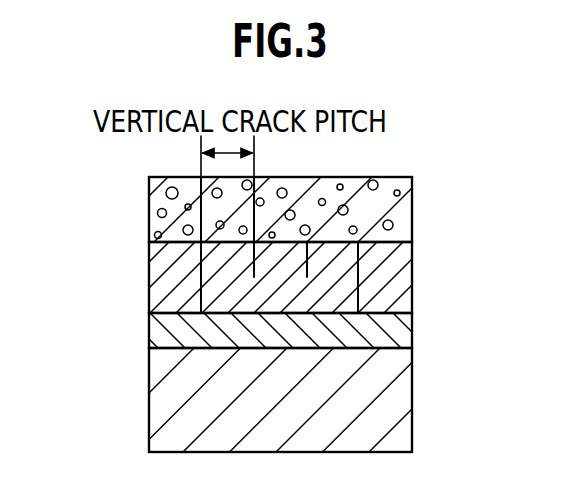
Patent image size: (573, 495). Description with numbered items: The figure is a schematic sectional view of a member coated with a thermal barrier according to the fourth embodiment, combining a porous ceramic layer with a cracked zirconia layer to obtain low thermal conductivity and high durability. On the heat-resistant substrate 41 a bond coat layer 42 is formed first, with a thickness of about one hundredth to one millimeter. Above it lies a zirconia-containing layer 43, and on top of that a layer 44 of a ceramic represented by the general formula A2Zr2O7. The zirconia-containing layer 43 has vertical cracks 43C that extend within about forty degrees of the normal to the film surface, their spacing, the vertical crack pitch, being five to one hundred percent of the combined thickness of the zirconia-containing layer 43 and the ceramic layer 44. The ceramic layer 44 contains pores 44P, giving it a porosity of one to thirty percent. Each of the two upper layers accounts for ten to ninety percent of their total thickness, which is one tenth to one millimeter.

The heat-resistant substrate 41 is at (400, 397).
The bond coat layer 42 is at (400, 328).
The zirconia-containing layer 43 is at (400, 273).
The vertical cracks 43C is at (201, 283).
The ceramic layer 44 is at (400, 208).
The pores 44P is at (163, 190).